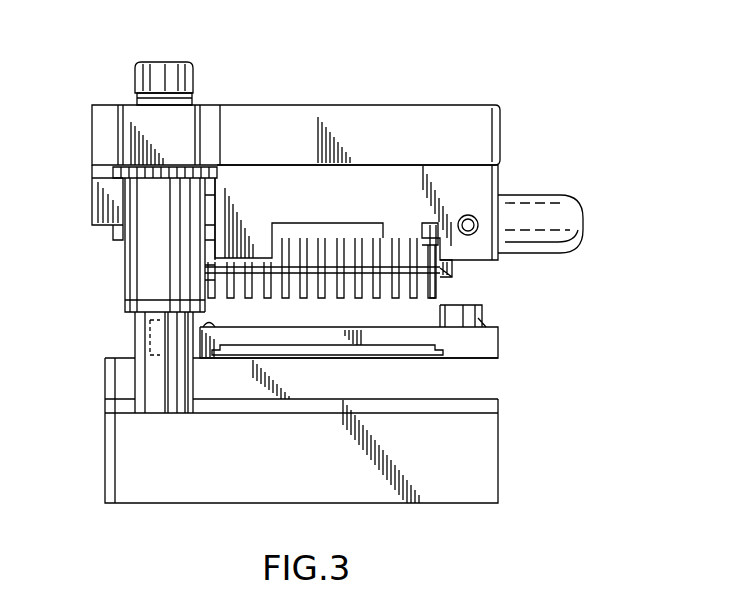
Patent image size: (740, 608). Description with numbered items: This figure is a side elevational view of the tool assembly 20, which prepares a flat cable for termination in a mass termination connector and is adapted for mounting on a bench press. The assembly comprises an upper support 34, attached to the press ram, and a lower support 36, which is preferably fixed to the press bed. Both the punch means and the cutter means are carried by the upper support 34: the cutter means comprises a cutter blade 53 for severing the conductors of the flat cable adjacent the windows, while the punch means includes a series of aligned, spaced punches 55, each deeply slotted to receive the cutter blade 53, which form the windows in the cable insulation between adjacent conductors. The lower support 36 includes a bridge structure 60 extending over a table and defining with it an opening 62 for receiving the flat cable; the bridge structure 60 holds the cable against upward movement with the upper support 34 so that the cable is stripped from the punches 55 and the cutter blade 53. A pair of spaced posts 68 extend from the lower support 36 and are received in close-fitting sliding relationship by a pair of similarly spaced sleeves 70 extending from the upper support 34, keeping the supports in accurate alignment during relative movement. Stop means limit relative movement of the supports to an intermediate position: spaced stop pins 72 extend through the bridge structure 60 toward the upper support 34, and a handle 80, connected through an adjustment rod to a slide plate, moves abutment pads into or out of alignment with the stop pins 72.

The tool assembly 20 is at (483, 80).
The upper support 34 is at (480, 123).
The lower support 36 is at (482, 467).
The cutter blade 53 is at (445, 267).
The punches 55 is at (436, 288).
The bridge structure 60 is at (487, 343).
The opening 62 is at (425, 352).
The posts 68 is at (133, 335).
The sleeves 70 is at (142, 260).
The stop pins 72 is at (148, 305).
The handle 80 is at (572, 210).